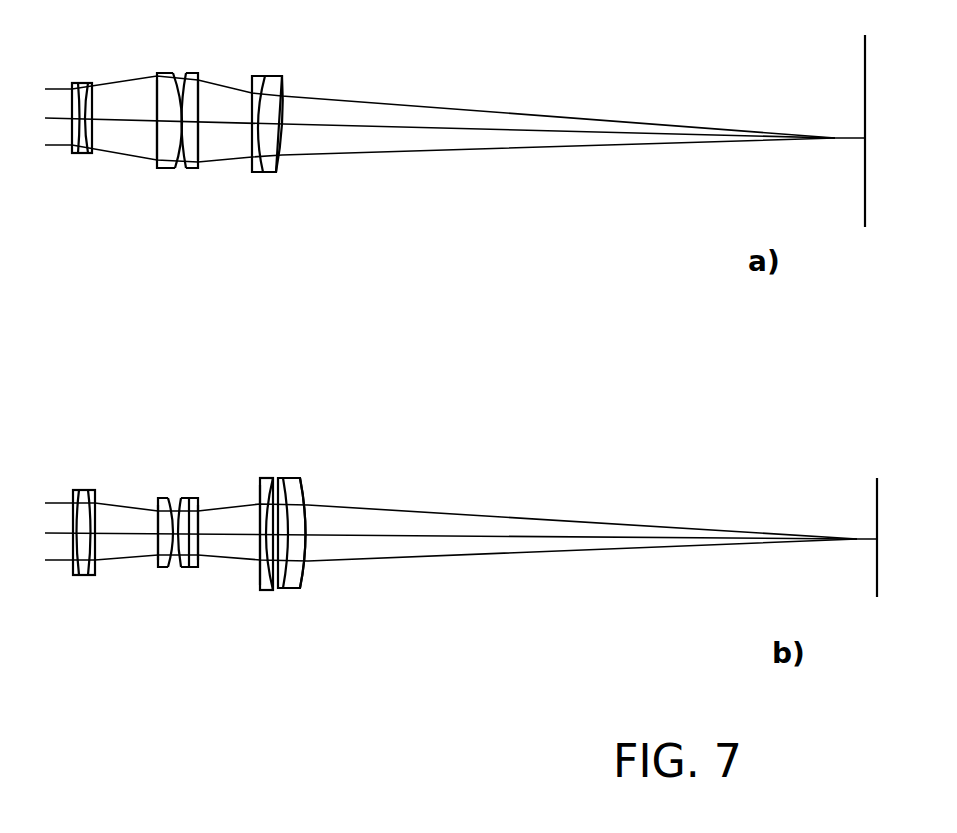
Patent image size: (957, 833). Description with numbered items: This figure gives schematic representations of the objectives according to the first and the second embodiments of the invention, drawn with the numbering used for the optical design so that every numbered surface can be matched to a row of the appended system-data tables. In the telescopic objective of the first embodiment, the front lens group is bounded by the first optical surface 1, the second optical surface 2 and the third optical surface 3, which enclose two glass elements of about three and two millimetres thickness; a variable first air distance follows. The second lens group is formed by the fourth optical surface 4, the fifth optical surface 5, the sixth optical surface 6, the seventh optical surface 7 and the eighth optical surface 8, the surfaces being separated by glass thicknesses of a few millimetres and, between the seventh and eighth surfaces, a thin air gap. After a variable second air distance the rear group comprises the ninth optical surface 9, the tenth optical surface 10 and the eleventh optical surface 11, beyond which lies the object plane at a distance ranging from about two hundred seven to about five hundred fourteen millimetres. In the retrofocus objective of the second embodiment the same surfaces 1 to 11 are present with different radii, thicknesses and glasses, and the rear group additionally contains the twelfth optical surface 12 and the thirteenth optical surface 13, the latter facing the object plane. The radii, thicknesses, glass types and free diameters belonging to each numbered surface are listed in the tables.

The first optical surface 1 is at (73, 90).
The second optical surface 2 is at (89, 152).
The third optical surface 3 is at (92, 93).
The fourth optical surface 4 is at (159, 160).
The fifth optical surface 5 is at (158, 82).
The sixth optical surface 6 is at (172, 166).
The seventh optical surface 7 is at (189, 77).
The eighth optical surface 8 is at (199, 160).
The ninth optical surface 9 is at (253, 84).
The tenth optical surface 10 is at (263, 172).
The eleventh optical surface 11 is at (280, 113).
The twelfth optical surface 12 is at (296, 575).
The thirteenth optical surface 13 is at (306, 497).